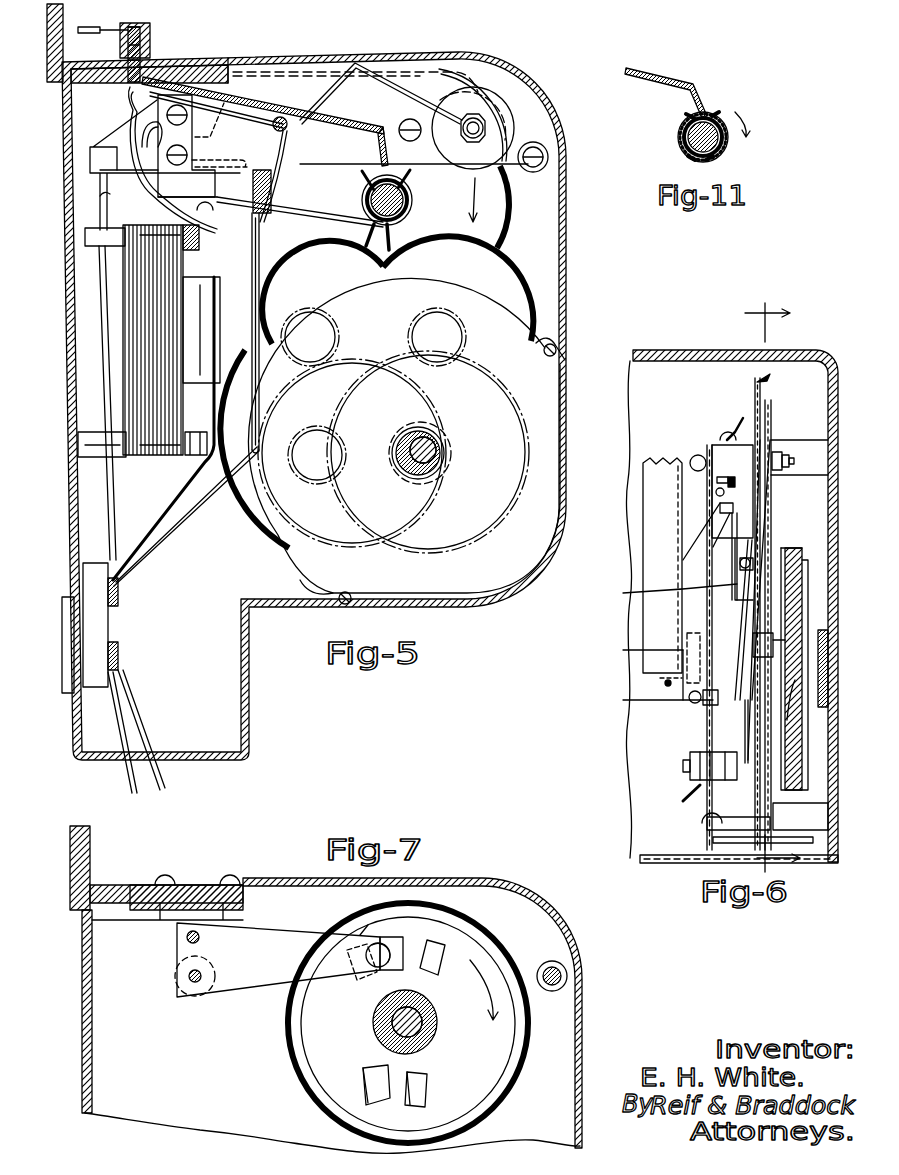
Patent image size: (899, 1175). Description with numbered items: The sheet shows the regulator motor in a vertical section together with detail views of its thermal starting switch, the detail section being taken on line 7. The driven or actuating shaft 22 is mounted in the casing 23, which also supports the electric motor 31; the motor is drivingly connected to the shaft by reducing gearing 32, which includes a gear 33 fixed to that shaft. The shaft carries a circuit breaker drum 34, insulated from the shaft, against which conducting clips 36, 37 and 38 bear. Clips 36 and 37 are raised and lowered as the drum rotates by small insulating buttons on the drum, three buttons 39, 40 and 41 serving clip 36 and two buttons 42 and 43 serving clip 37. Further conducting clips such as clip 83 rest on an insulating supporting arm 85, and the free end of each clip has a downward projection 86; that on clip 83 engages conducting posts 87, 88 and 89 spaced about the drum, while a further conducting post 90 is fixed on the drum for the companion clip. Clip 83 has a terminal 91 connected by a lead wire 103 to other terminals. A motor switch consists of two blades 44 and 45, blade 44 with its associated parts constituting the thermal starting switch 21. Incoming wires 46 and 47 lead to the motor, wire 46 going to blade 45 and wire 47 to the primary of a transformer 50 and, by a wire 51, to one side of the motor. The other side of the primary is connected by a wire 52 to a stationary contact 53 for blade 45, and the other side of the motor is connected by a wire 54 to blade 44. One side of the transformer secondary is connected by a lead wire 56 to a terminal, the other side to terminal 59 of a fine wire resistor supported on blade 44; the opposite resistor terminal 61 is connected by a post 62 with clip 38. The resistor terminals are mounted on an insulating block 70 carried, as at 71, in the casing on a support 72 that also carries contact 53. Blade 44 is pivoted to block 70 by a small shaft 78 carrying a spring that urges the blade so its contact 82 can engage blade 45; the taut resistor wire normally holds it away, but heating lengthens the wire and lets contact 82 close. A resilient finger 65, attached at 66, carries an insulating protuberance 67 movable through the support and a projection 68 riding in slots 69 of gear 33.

In FIG. 6, the section line 7— 7 is at (781, 587).
In FIG. 5, the thermal starting switch 21 is at (317, 65).
In FIG. 6, the thermal starting switch 21 is at (698, 446).
In FIG. 5, the driven or actuating shaft 22 is at (370, 196).
In FIG. 11, the driven or actuating shaft 22 is at (727, 145).
In FIG. 7, the driven or actuating shaft 22 is at (430, 1022).
In FIG. 5, the casing 23 is at (572, 393).
In FIG. 6, the casing 23 is at (712, 352).
In FIG. 7, the casing 23 is at (100, 1060).
In FIG. 5, the electric motor 31 is at (494, 572).
In FIG. 5, the reducing gearing 32 is at (533, 270).
In FIG. 5, the gear 33 is at (512, 207).
In FIG. 6, the gear 33 is at (792, 547).
In FIG. 7, the gear 33 is at (495, 1073).
In FIG. 5, the circuit breaker drum 34 is at (362, 204).
In FIG. 11, the circuit breaker drum 34 is at (678, 137).
In FIG. 6, the circuit breaker drum 34 is at (633, 656).
In FIG. 5, the conducting clip 36 is at (262, 108).
In FIG. 11, the conducting clip 36 is at (672, 78).
In FIG. 6, the conducting clip 37 is at (640, 553).
In FIG. 5, the conducting clip 38 is at (296, 209).
In FIG. 6, the conducting clip 38 is at (690, 540).
In FIG. 11, the insulating button 39 is at (685, 116).
In FIG. 11, the insulating button 40 is at (688, 158).
In FIG. 11, the insulating button 41 is at (712, 158).
In FIG. 11, the insulating button 42 is at (715, 112).
In FIG. 6, the insulating button 42 is at (660, 678).
In FIG. 11, the insulating button 43 is at (735, 110).
In FIG. 6, the insulating button 43 is at (665, 684).
In FIG. 6, the motor switch blade 44 is at (623, 593).
In FIG. 5, the motor switch blade 45 is at (97, 150).
In FIG. 6, the motor switch blade 45 is at (765, 393).
In FIG. 5, the incoming wire 46 is at (102, 200).
In FIG. 6, the incoming wire 46 is at (770, 378).
In FIG. 5, the incoming wire 47 is at (157, 525).
In FIG. 5, the transformer 50 is at (150, 372).
In FIG. 5, the wire 51 is at (170, 535).
In FIG. 5, the wire 52 is at (483, 103).
In FIG. 6, the wire 52 is at (688, 800).
In FIG. 5, the stationary contact 53 is at (483, 130).
In FIG. 6, the stationary contact 53 is at (732, 775).
In FIG. 5, the wire 54 is at (270, 325).
In FIG. 5, the lead wire 56 is at (140, 125).
In FIG. 6, the terminal 59 is at (717, 480).
In FIG. 6, the terminal 61 is at (718, 508).
In FIG. 5, the post 62 is at (212, 208).
In FIG. 6, the post 62 is at (716, 493).
In FIG. 6, the resilient finger 65 is at (769, 432).
In FIG. 7, the resilient finger 65 is at (258, 988).
In FIG. 5, the attachment point 66 is at (167, 112).
In FIG. 6, the attachment point 66 is at (788, 450).
In FIG. 7, the attachment point 66 is at (187, 938).
In FIG. 6, the insulating protuberance 67 is at (775, 640).
In FIG. 7, the insulating protuberance 67 is at (372, 943).
In FIG. 6, the projection 68 is at (795, 730).
In FIG. 7, the projection 68 is at (388, 940).
In FIG. 6, the slots or openings 69 is at (826, 705).
In FIG. 7, the slots or openings 69 is at (437, 950).
In FIG. 5, the insulating block 70 is at (160, 184).
In FIG. 6, the insulating block 70 is at (728, 460).
In FIG. 6, the mounting 71 is at (690, 460).
In FIG. 7, the mounting 71 is at (189, 977).
In FIG. 5, the support 72 is at (547, 151).
In FIG. 6, the support 72 is at (704, 832).
In FIG. 7, the support 72 is at (552, 976).
In FIG. 6, the shaft 78 is at (752, 560).
In FIG. 6, the contact 82 is at (748, 705).
In FIG. 5, the conducting clip 83 is at (266, 110).
In FIG. 5, the insulating supporting arm 85 is at (282, 118).
In FIG. 5, the downward projection 86 is at (380, 140).
In FIG. 5, the conducting post 87 is at (365, 180).
In FIG. 5, the conducting post 88 is at (412, 178).
In FIG. 5, the conducting post 89 is at (396, 236).
In FIG. 5, the conducting post 90 is at (352, 231).
In FIG. 5, the terminal 91 is at (150, 40).
In FIG. 5, the lead wire 103 is at (86, 27).